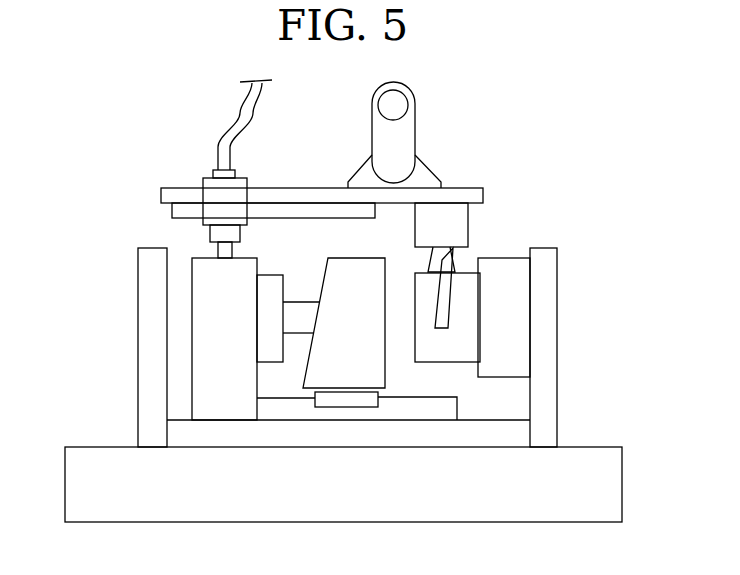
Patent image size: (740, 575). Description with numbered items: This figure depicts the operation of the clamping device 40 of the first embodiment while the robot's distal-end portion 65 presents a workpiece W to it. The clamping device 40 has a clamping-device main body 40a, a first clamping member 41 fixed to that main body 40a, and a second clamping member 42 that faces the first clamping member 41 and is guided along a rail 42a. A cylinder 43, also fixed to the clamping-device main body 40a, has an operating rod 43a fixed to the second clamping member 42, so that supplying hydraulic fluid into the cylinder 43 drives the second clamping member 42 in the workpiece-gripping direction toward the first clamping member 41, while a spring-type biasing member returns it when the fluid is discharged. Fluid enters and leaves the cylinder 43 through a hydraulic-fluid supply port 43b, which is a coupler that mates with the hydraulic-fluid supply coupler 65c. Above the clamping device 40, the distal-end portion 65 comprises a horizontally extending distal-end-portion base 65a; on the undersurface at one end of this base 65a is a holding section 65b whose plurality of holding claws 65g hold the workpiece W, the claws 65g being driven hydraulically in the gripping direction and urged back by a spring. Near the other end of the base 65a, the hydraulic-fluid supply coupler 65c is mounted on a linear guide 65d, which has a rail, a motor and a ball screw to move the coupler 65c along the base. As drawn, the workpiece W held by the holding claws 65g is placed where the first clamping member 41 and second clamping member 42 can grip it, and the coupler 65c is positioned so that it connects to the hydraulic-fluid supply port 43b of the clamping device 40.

The clamping device 40 is at (352, 385).
The clamping-device main body 40a is at (138, 405).
The first clamping member 41 is at (507, 377).
The second clamping member 42 is at (345, 258).
The rail 42a is at (395, 407).
The cylinder 43 is at (192, 356).
The operating rod 43a is at (292, 335).
The hydraulic-fluid supply port 43b is at (215, 250).
The distal-end portion 65 is at (415, 137).
The distal-end-portion base 65a is at (485, 197).
The holding section 65b is at (468, 227).
The hydraulic-fluid supply coupler 65c is at (202, 181).
The linear guide 65d is at (172, 210).
The holding claws 65g is at (432, 267).
The workpiece W is at (445, 362).